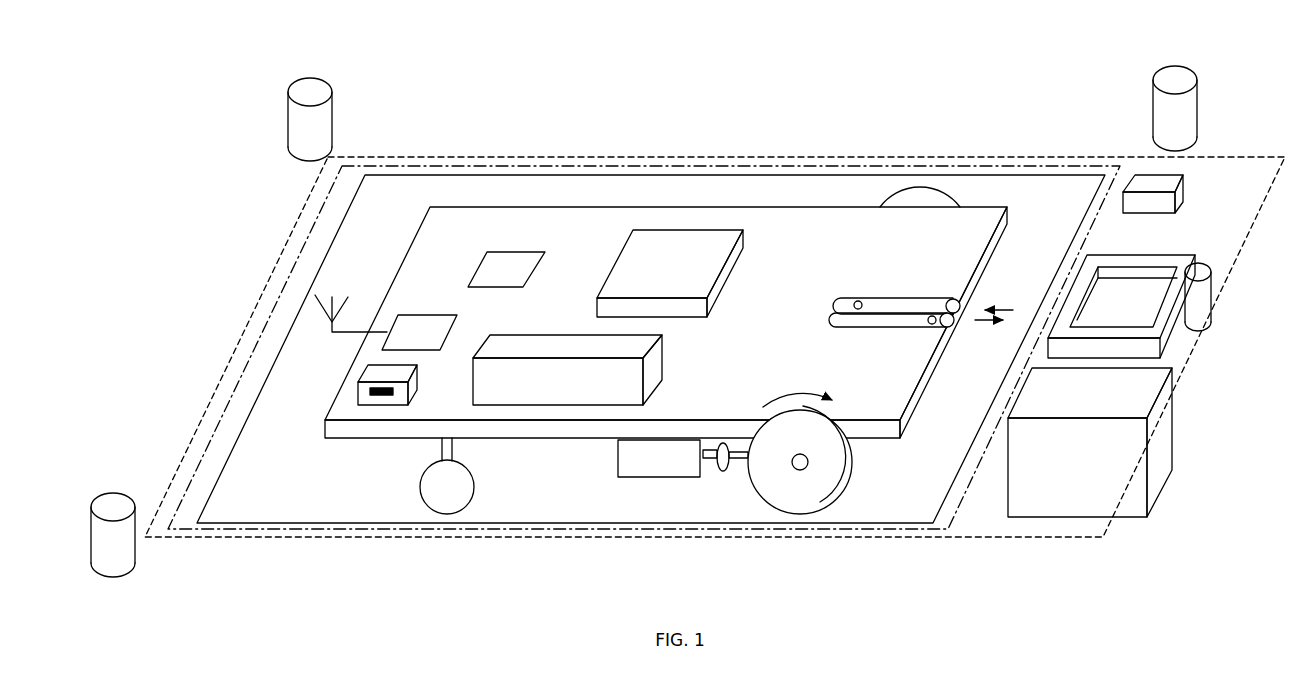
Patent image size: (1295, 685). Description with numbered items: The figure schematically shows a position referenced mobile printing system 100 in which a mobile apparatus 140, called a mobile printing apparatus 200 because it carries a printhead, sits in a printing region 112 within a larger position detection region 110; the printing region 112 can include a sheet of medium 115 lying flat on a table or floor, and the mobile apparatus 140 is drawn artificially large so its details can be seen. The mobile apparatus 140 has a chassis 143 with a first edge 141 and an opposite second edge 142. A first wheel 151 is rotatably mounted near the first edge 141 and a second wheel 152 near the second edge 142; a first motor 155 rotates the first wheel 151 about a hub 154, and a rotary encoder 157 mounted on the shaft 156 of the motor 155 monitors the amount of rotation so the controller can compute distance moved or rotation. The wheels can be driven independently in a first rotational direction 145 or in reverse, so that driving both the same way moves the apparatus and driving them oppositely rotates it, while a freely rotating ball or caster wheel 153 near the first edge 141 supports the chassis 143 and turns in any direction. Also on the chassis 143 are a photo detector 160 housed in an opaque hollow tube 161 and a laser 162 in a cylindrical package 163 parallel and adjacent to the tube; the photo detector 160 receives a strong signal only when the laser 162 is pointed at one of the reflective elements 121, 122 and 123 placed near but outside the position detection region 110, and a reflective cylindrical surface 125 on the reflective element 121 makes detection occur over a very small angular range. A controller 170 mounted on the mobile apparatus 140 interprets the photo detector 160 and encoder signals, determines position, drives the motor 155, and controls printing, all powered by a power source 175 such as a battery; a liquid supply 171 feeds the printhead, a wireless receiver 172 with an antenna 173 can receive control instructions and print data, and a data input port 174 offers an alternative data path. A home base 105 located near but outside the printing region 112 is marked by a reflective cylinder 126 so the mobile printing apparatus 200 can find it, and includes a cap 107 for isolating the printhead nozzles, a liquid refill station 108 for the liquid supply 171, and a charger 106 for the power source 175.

The position referenced mobile printing system 100 is at (213, 82).
The home base 105 is at (1090, 572).
The charger 106 is at (1138, 210).
The cap 107 is at (1170, 323).
The liquid refill station 108 is at (1163, 445).
The position detection region 110 is at (243, 330).
The printing region 112 is at (298, 260).
The sheet of medium 115 is at (352, 237).
The reflective element 121 is at (347, 109).
The reflective element 122 is at (1172, 77).
The reflective element 123 is at (108, 502).
The reflective cylindrical surface 125 is at (322, 117).
The reflective cylinder 126 is at (1207, 292).
The mobile apparatus 140 is at (666, 345).
The mobile printing apparatus 200 is at (666, 345).
The first edge 141 is at (540, 428).
The second edge 142 is at (518, 205).
The chassis 143 is at (805, 237).
The first rotational direction 145 is at (773, 393).
The first wheel 151 is at (850, 490).
The second wheel 152 is at (917, 183).
The freely rotating ball or caster wheel 153 is at (432, 508).
The hub 154 is at (800, 462).
The first motor 155 is at (653, 472).
The shaft 156 is at (740, 462).
The rotary encoder 157 is at (717, 465).
The photo detector 160 is at (857, 301).
The hollow tube 161 is at (910, 300).
The laser 162 is at (931, 325).
The cylindrical package 163 is at (855, 330).
The controller 170 is at (498, 250).
The liquid supply 171 is at (568, 343).
The wireless receiver 172 is at (445, 312).
The antenna 173 is at (333, 322).
The data input port 174 is at (357, 393).
The power source 175 is at (640, 265).